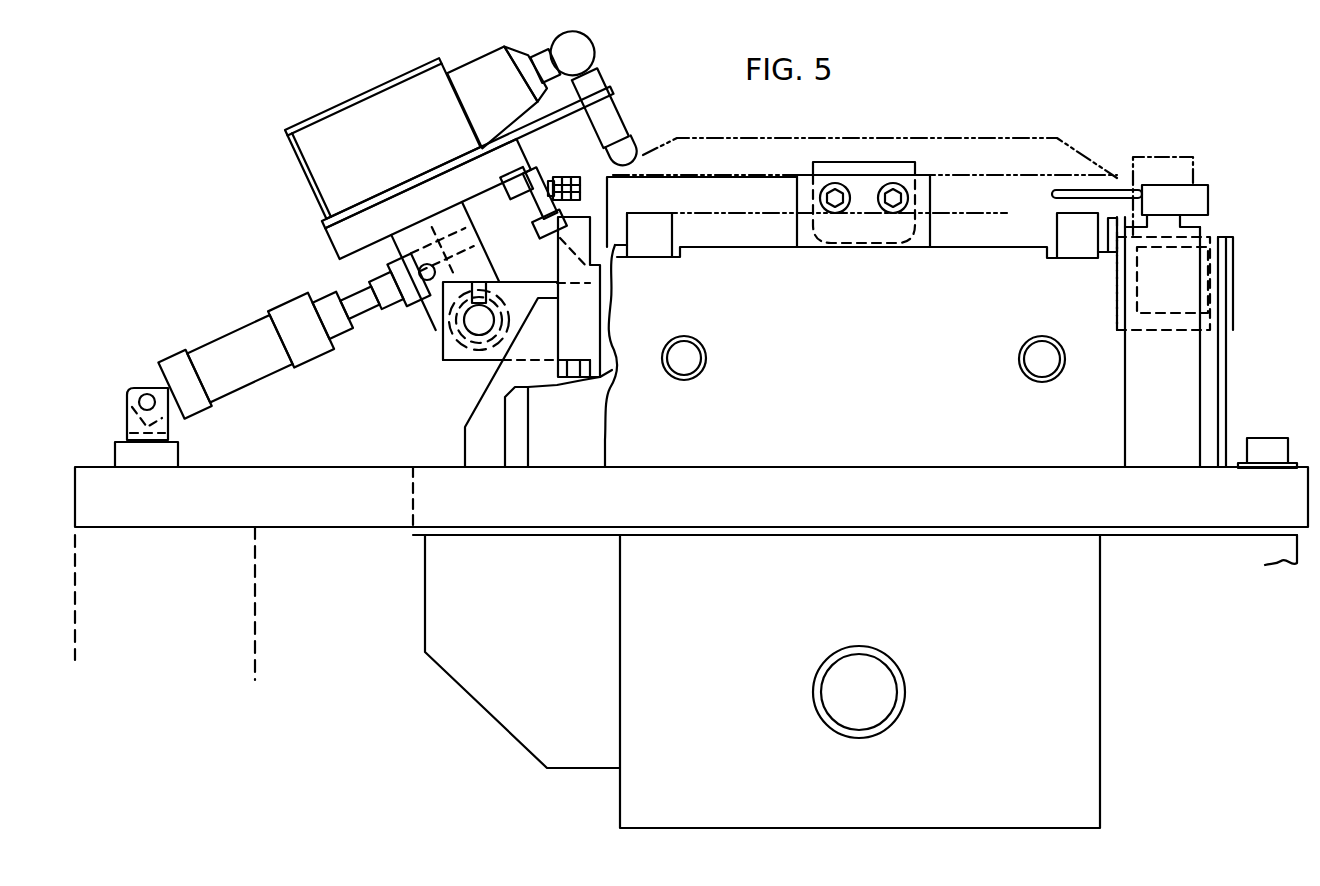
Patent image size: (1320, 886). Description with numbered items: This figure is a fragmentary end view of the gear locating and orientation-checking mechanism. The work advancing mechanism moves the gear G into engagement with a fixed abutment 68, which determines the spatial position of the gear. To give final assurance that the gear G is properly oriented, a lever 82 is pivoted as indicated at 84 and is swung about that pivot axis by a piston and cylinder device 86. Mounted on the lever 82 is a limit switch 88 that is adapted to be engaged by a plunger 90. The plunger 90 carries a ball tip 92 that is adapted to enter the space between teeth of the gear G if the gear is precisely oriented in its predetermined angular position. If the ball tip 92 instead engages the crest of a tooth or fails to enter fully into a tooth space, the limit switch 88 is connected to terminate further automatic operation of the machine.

The fixed abutment 68 is at (882, 162).
The lever 82 is at (333, 253).
The pivot 84 is at (443, 353).
The piston and cylinder device 86 is at (231, 344).
The limit switch 88 is at (370, 96).
The plunger 90 is at (597, 84).
The ball tip 92 is at (631, 147).
The gear G is at (1068, 143).